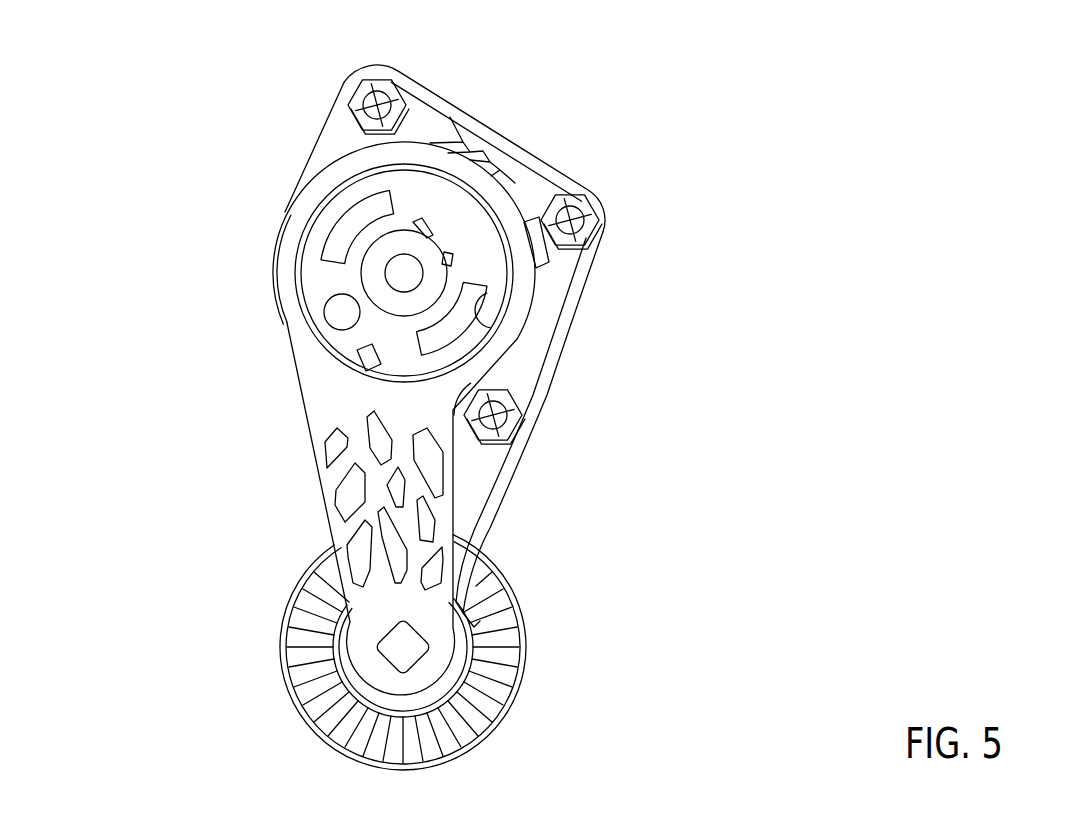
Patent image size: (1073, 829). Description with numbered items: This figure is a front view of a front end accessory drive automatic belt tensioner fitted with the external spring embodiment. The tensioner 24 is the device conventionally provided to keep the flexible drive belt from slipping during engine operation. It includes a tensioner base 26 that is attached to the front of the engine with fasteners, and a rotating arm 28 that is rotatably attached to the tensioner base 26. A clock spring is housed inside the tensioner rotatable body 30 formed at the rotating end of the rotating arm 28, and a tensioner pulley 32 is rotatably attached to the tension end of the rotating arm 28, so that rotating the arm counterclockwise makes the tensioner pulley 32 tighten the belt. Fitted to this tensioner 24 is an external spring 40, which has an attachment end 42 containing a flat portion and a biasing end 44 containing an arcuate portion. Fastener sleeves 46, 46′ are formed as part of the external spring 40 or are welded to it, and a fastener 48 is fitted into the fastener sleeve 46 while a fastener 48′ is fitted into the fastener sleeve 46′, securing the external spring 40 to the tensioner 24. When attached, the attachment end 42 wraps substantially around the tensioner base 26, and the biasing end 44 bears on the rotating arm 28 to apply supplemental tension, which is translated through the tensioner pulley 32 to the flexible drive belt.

The tensioner 24 is at (312, 368).
The tensioner base 26 is at (342, 138).
The rotating arm 28 is at (328, 418).
The tensioner housing 30 is at (285, 272).
The tensioner pulley 32 is at (305, 683).
The external spring 40 is at (583, 288).
The attachment end 42 is at (487, 125).
The biasing end 44 is at (500, 596).
The fastener sleeve 46 is at (408, 117).
The fastener sleeve 46′ is at (560, 197).
The fastener 48 is at (357, 93).
The fastener 48′ is at (600, 213).